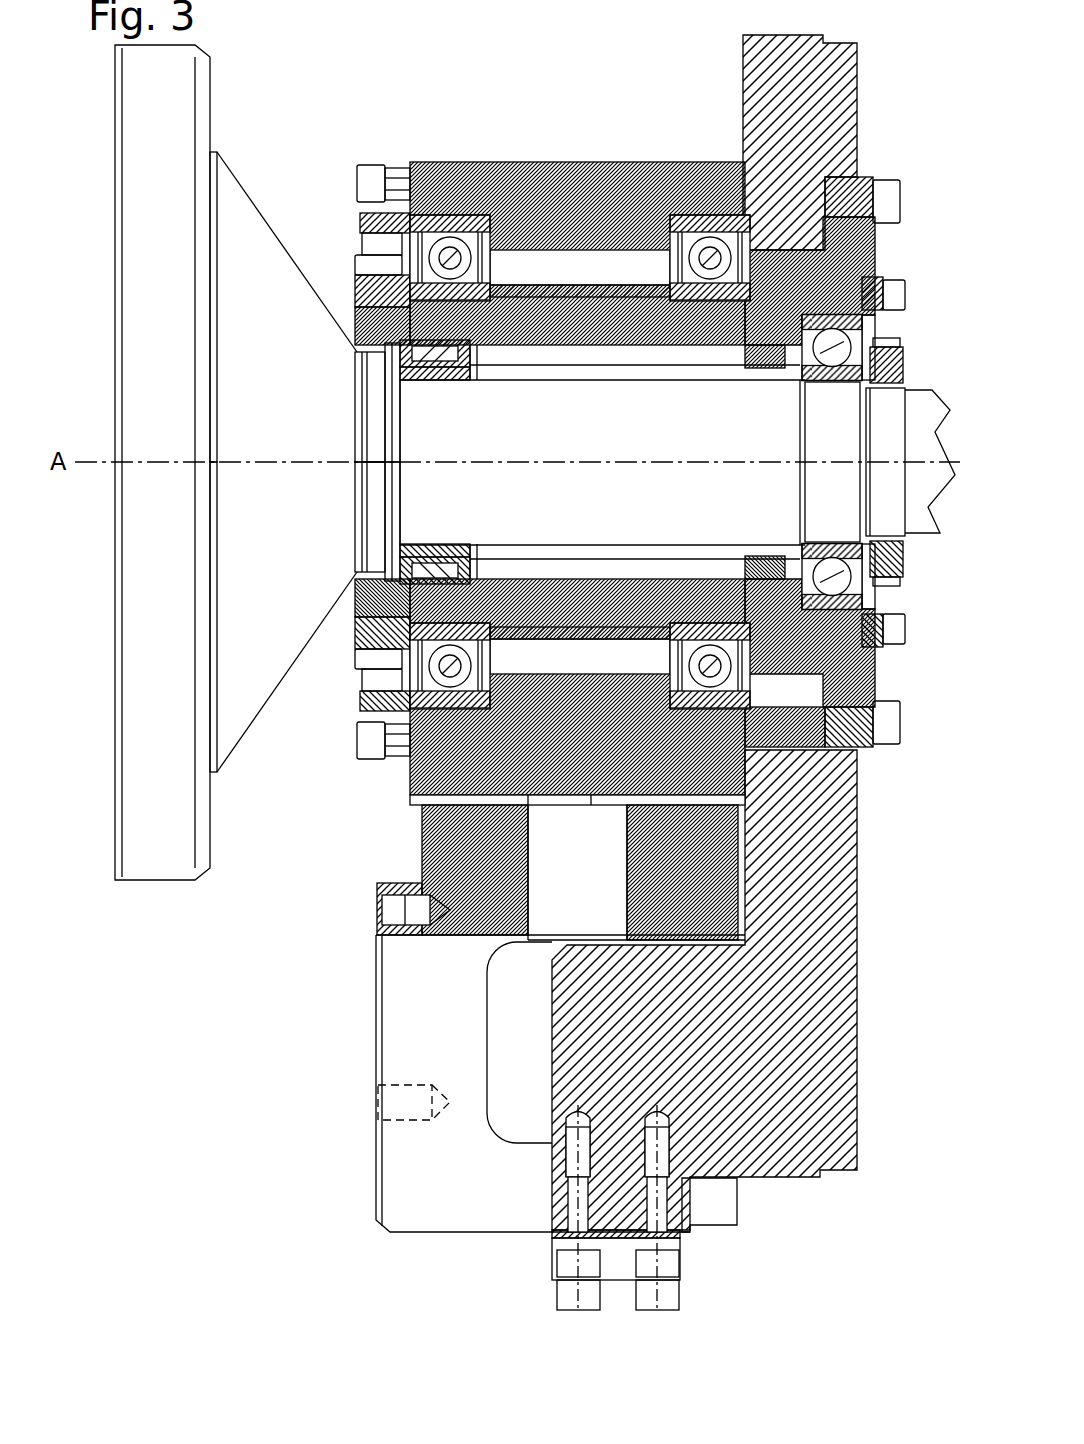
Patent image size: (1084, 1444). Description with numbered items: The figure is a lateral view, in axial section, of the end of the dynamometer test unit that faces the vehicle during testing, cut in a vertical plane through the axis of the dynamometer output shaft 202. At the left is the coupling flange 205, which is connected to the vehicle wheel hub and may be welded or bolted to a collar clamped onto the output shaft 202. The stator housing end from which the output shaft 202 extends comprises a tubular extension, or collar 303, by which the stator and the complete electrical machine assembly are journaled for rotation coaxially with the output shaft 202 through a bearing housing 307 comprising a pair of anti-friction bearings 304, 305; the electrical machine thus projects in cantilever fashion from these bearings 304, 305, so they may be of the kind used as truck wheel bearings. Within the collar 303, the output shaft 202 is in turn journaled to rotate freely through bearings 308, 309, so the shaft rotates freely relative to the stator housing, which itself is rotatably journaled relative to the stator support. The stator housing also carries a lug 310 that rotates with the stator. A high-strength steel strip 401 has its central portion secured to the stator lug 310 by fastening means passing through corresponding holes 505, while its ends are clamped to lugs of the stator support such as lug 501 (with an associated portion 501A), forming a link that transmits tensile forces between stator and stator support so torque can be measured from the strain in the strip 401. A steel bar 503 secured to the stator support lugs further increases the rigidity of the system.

The output shaft 202 is at (677, 462).
The coupling flange 205 is at (212, 808).
The collar 303 is at (845, 648).
The anti-friction bearing 304 is at (492, 162).
The anti-friction bearing 305 is at (693, 255).
The bearing housing 307 is at (540, 742).
The bearing 308 is at (850, 565).
The bearing 309 is at (405, 570).
The lug 310 is at (797, 1075).
The strip 401 is at (577, 1232).
The lug 501 is at (560, 1057).
The bracket block 501A is at (695, 842).
The steel bar 503 is at (612, 1280).
The holes 505 is at (682, 1197).